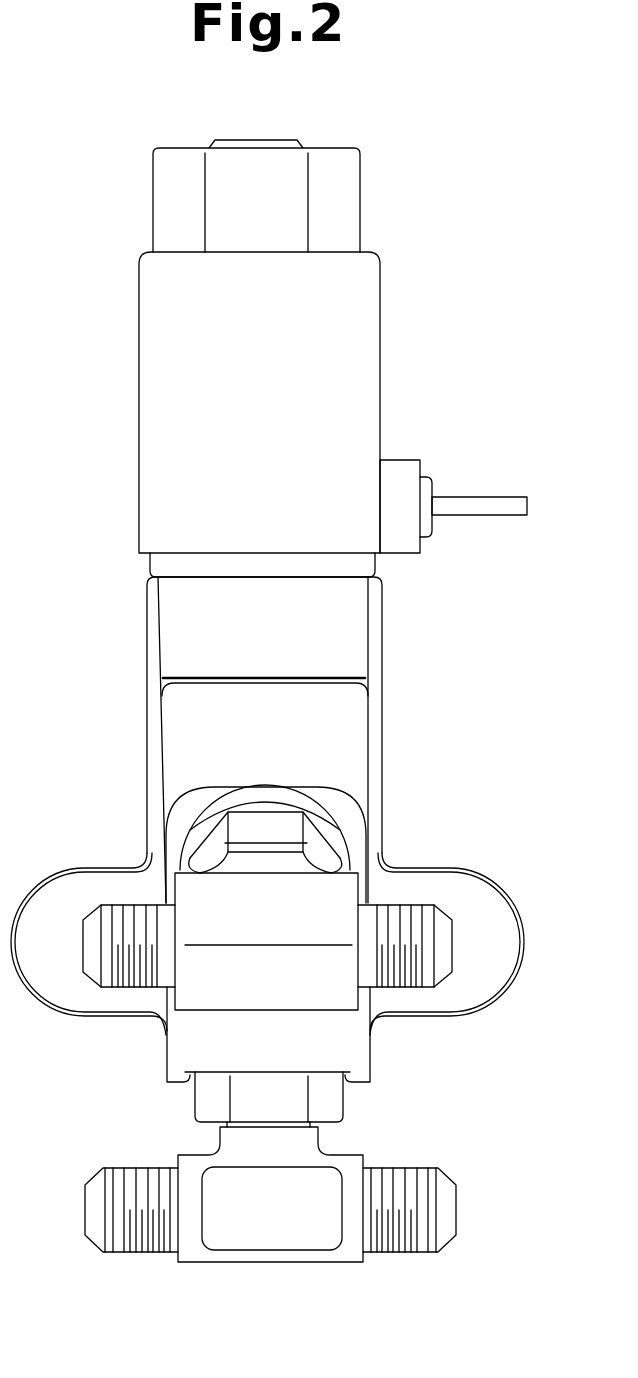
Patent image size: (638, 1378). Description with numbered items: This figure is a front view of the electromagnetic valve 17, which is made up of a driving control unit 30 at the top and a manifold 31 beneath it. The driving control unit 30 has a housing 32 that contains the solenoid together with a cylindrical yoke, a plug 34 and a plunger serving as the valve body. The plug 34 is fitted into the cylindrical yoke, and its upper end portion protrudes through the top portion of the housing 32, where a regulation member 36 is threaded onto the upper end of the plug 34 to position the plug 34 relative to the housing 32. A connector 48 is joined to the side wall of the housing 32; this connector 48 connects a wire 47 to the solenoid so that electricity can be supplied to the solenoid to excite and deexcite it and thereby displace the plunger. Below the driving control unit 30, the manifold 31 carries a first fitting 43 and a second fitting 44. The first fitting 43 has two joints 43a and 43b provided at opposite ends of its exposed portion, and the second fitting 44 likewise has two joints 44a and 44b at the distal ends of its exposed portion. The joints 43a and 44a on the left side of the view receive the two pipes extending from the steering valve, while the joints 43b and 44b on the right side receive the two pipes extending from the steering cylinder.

The electromagnetic valve 17 is at (108, 506).
The driving control unit 30 is at (132, 371).
The manifold 31 is at (140, 733).
The housing 32 is at (382, 358).
The plug 34 is at (260, 140).
The regulation member 36 is at (362, 190).
The first fitting 43 is at (268, 1000).
The joint 43a is at (130, 903).
The joint 43b is at (404, 903).
The second fitting 44 is at (272, 1237).
The joint 44a is at (135, 1166).
The joint 44b is at (403, 1166).
The wire 47 is at (493, 497).
The connector 48 is at (400, 460).